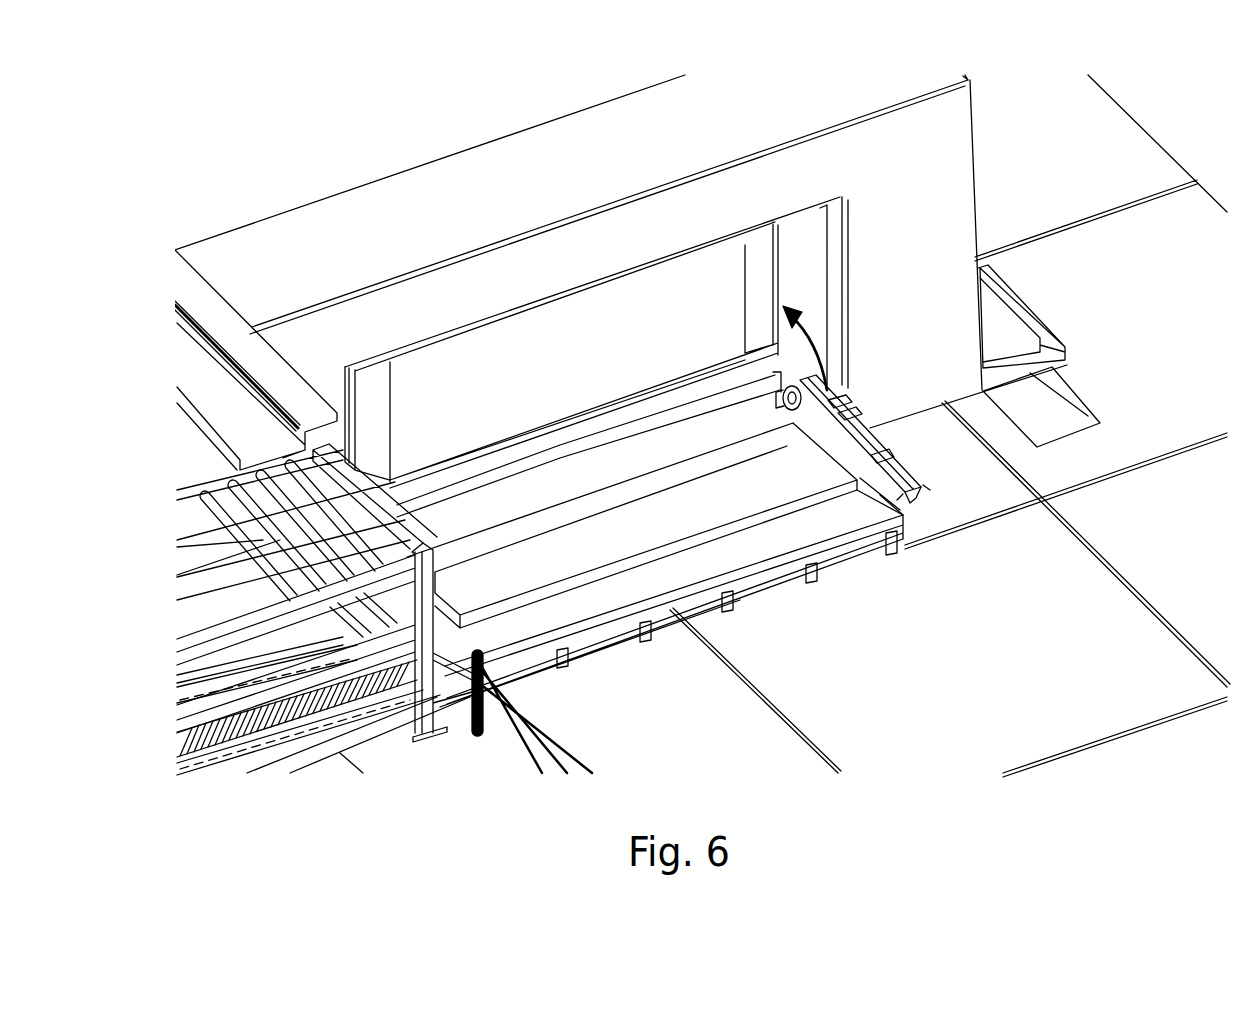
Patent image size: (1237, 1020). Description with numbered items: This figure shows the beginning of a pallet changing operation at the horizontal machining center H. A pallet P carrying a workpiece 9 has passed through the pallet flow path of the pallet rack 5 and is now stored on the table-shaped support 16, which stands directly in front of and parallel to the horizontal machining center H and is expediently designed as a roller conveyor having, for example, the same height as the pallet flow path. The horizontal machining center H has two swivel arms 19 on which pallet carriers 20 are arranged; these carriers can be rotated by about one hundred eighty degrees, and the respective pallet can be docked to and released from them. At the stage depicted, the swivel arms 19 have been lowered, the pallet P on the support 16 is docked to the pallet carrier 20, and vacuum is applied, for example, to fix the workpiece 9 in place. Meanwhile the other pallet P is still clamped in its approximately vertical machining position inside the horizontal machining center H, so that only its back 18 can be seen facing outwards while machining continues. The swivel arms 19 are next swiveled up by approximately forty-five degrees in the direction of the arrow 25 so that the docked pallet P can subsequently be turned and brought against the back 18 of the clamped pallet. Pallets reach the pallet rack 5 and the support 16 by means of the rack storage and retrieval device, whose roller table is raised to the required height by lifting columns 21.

The horizontal machining center H is at (444, 172).
The pallet P is at (627, 320).
The rear side of the pallet 18 is at (673, 290).
The arrow 25 is at (820, 333).
The swivel arms 19 is at (868, 443).
The workpiece 9 is at (621, 547).
The lifting columns 21 is at (855, 510).
The table-shaped support 16 is at (660, 610).
The pallet carriers 20 is at (377, 625).
The pallet rack 5 is at (355, 492).